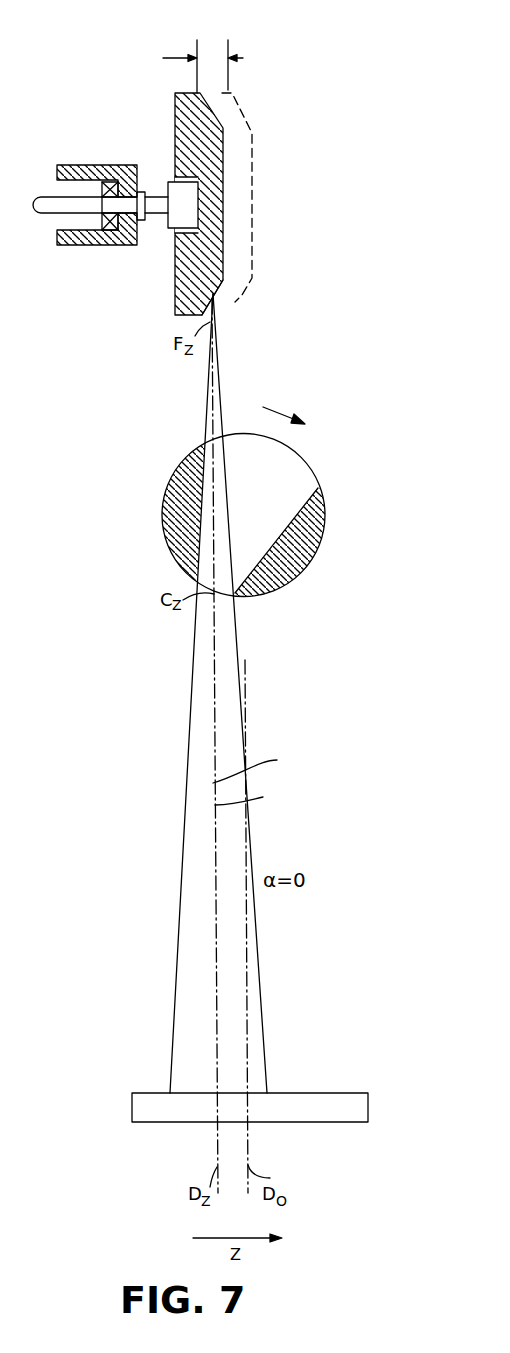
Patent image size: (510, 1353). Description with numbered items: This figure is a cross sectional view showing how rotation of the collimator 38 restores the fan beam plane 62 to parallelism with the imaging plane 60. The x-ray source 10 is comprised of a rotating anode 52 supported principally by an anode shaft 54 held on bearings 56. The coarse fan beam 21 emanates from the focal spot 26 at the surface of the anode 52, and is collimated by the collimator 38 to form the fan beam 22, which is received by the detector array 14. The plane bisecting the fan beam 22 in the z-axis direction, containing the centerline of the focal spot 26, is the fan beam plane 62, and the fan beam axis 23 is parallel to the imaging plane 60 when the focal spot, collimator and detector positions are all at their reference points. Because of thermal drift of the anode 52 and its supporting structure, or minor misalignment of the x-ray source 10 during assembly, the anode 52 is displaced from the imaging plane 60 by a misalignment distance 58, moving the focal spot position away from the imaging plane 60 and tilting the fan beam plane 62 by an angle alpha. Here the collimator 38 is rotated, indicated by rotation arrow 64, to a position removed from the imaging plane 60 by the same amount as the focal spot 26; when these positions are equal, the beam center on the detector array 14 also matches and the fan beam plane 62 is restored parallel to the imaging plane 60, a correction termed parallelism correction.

The x-ray source 10 is at (281, 65).
The detector array 14 is at (372, 1107).
The coarse fan beam 21 is at (217, 373).
The fan beam 22 is at (200, 712).
The fan beam axis 23 is at (256, 805).
The focal spot 26 is at (214, 294).
The collimator 38 is at (325, 520).
The rotating anode 52 is at (175, 98).
The anode shaft 54 is at (52, 212).
The bearings 56 is at (120, 246).
The misalignment distance 58 is at (212, 58).
The imaging plane 60 is at (245, 938).
The fan beam plane 62 is at (262, 765).
The rotation direction of disc 64 is at (285, 409).